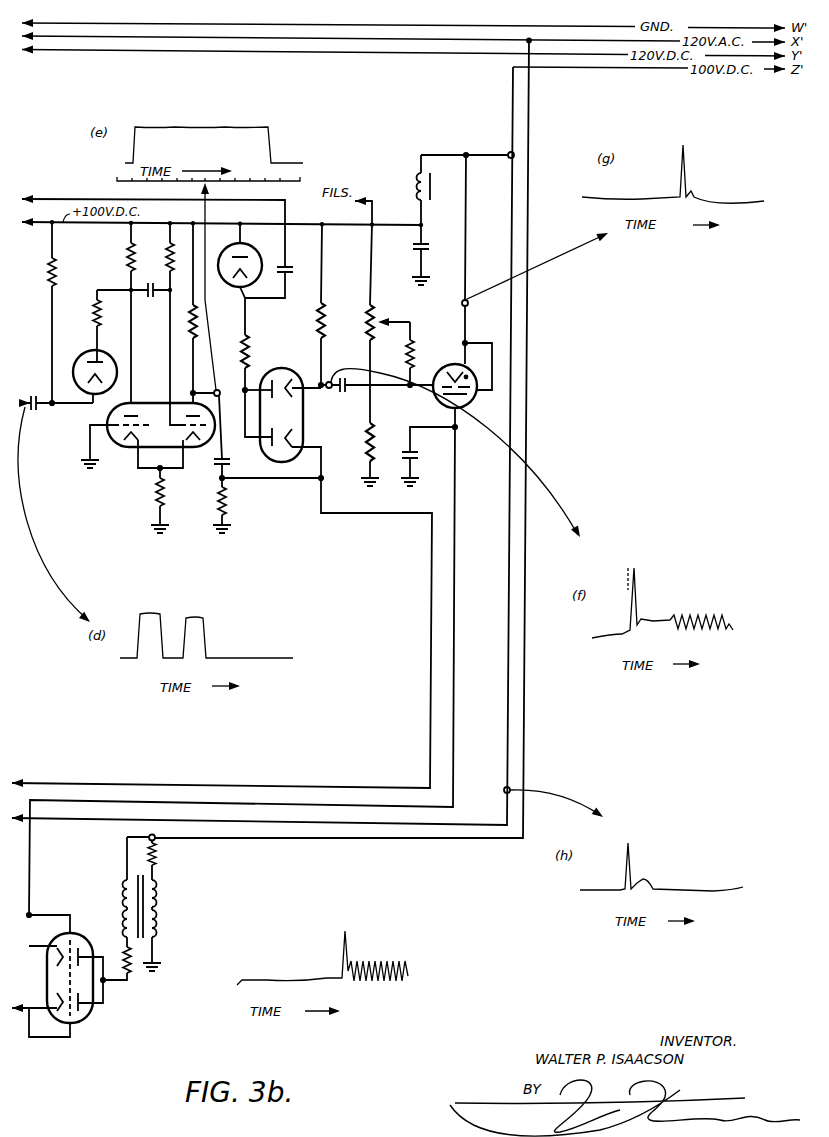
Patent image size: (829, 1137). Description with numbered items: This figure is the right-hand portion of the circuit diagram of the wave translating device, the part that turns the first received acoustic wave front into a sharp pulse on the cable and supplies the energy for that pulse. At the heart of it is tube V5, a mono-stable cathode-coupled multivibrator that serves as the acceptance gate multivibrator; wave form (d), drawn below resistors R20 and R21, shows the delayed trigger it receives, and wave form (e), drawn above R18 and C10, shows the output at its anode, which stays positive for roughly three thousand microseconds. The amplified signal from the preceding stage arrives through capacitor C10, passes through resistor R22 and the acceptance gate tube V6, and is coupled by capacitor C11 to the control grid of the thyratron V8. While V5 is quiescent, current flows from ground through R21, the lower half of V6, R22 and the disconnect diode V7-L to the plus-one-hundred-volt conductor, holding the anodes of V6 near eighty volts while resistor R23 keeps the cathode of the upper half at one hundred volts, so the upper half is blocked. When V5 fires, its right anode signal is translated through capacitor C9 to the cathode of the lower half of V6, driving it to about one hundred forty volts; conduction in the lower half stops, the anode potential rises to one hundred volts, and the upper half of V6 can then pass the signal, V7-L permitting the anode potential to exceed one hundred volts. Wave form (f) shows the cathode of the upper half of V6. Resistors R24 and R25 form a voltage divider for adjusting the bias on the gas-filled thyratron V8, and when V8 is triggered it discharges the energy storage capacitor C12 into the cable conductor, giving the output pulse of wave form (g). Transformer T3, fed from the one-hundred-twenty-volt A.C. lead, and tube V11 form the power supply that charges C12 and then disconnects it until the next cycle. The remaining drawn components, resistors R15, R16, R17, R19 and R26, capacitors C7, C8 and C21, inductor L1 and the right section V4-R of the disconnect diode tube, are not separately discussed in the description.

The resistor R15 is at (38, 312).
The resistor R16 is at (95, 320).
The resistor R17 is at (113, 313).
The resistor R18 is at (160, 324).
The resistor R19 is at (186, 322).
The resistor R20 is at (140, 499).
The resistor R21 is at (237, 505).
The resistor R22 is at (262, 386).
The resistor R23 is at (304, 305).
The resistor R24 is at (371, 323).
The resistor R25 is at (354, 454).
The resistor R26 is at (425, 362).
The capacitor C7 is at (56, 414).
The capacitor C8 is at (150, 300).
The capacitor C9 is at (268, 438).
The capacitor C10 is at (281, 281).
The capacitor C11 is at (378, 394).
The energy storage capacitor C12 is at (428, 456).
The capacitor C21 is at (434, 255).
The inductor L1 is at (433, 190).
The transformer T3 is at (141, 908).
The vacuum tube (diode) V4-R is at (86, 369).
The acceptance gate multivibrator tube V5 is at (148, 425).
The acceptance gate V6 is at (292, 423).
The disconnect diode V7-L is at (247, 279).
The thyratron V8 is at (462, 292).
The tube V11 is at (58, 975).